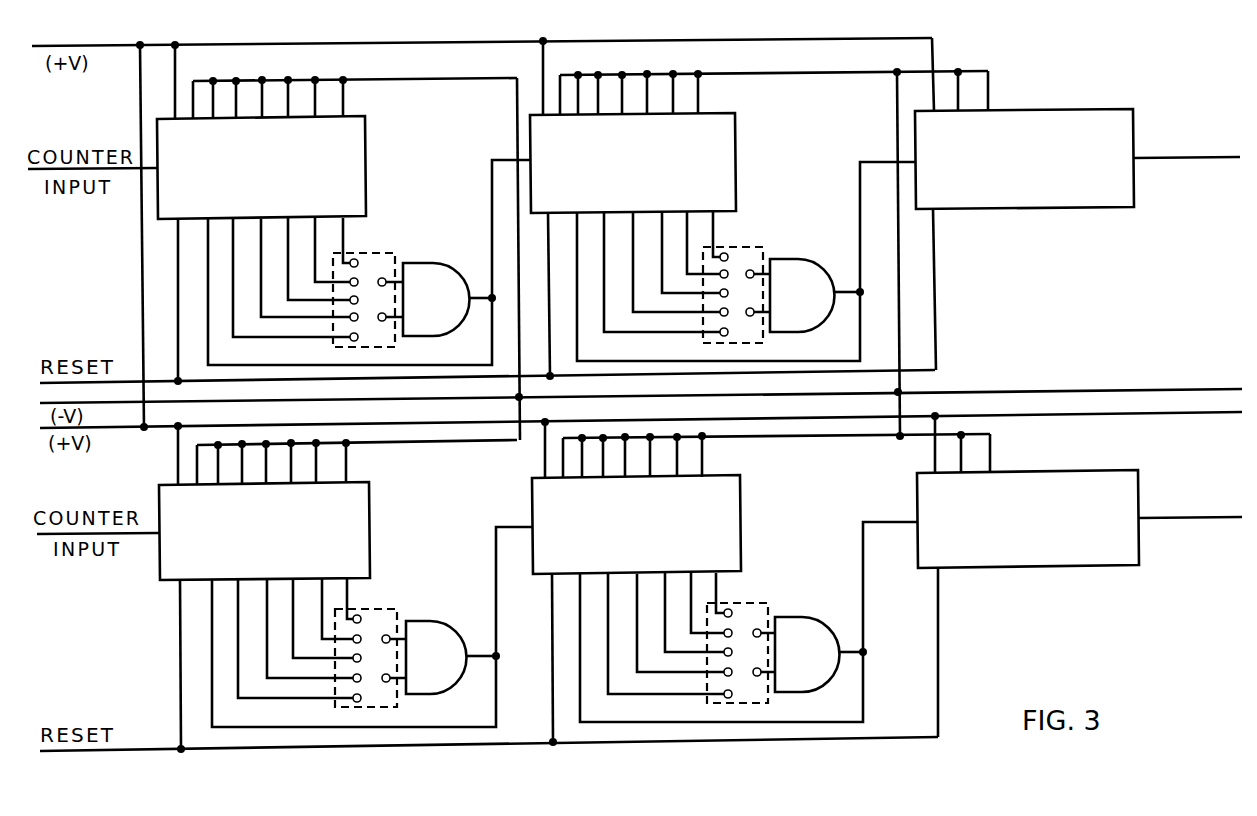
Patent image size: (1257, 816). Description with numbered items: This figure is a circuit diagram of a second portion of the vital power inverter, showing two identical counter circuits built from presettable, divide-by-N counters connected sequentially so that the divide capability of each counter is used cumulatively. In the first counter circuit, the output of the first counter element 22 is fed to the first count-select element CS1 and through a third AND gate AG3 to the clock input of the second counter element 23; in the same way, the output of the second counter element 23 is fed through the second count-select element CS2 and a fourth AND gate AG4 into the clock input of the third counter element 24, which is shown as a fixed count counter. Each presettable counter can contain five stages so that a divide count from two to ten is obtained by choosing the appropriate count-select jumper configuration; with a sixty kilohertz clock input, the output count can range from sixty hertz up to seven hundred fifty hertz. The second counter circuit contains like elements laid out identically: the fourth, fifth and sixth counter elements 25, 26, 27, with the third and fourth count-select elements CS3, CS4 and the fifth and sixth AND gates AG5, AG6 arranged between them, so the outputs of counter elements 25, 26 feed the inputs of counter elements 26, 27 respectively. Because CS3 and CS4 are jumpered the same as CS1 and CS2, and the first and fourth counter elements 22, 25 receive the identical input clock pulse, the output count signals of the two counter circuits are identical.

The first counter element 22 is at (350, 152).
The second counter element 23 is at (720, 147).
The third counter element 24 is at (1120, 135).
The fourth counter element 25 is at (355, 520).
The fifth counter element 26 is at (725, 513).
The sixth counter element 27 is at (1123, 498).
The first count-select element CS1 is at (377, 250).
The second count-select element CS2 is at (749, 244).
The third count-select element CS3 is at (379, 609).
The fourth count-select element CS4 is at (752, 602).
The third AND gate AG3 is at (415, 263).
The fourth AND gate AG4 is at (781, 259).
The fifth AND gate AG5 is at (411, 621).
The sixth AND gate AG6 is at (781, 617).